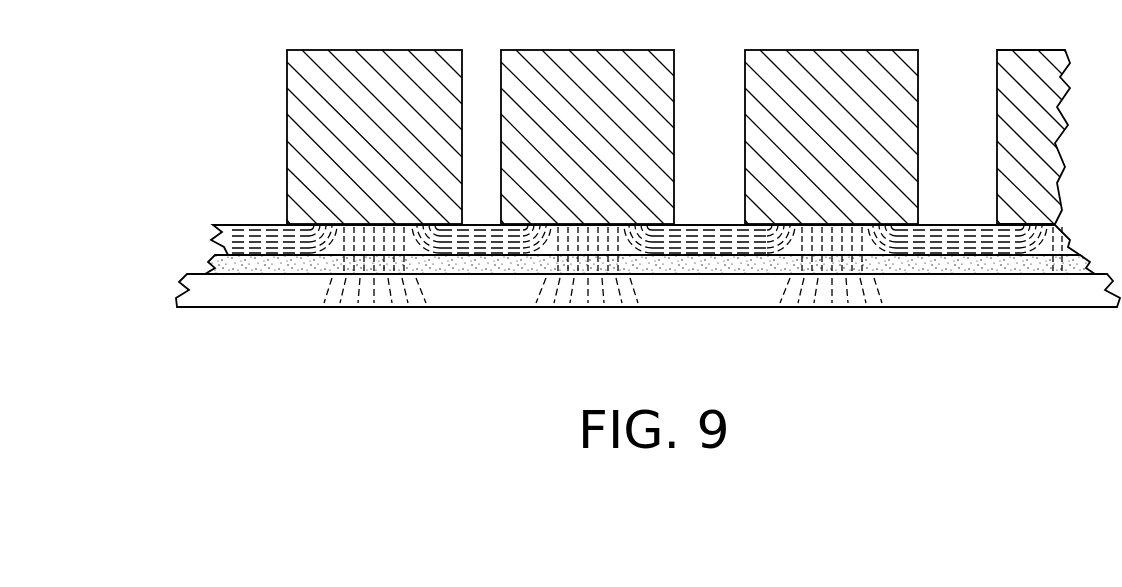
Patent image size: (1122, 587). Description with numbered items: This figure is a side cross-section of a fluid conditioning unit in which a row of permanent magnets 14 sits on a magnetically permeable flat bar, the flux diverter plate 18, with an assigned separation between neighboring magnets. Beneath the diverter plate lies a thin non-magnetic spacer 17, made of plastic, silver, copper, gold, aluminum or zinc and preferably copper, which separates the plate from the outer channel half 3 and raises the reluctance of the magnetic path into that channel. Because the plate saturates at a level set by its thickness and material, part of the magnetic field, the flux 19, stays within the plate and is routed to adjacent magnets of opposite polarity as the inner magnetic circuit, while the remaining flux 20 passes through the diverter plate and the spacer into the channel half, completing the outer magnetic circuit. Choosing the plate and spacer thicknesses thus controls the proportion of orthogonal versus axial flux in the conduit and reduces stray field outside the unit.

The channel half 3 is at (251, 306).
The magnet 14 is at (832, 50).
The non-magnetic spacer 17 is at (462, 260).
The flux diverter plate 18 is at (255, 225).
The flux directed to adjacent magnets 19 is at (732, 243).
The flux passing through the flux diverter plate 20 is at (630, 284).